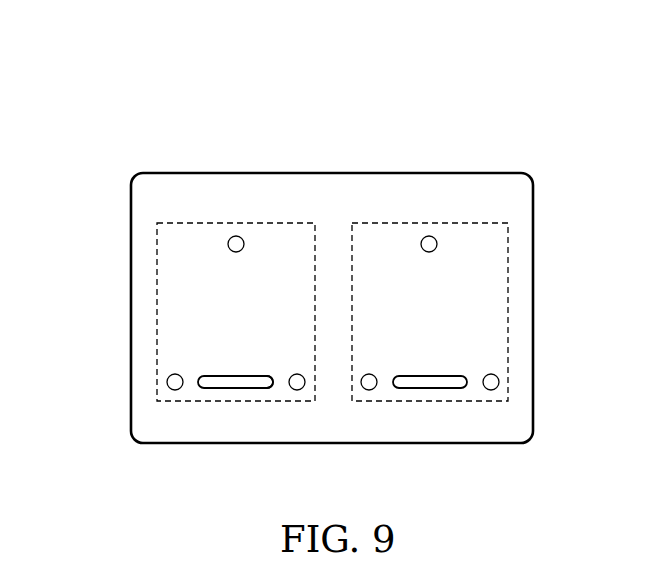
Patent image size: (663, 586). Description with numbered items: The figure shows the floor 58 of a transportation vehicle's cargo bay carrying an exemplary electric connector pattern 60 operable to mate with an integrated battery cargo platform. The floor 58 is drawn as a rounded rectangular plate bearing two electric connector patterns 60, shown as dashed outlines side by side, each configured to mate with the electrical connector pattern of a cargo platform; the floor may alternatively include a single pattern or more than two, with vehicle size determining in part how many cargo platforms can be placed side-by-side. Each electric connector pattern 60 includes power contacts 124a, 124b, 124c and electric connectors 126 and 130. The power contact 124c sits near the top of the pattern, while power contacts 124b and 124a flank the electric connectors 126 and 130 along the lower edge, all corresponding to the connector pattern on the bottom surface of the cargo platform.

The floor 58 is at (256, 173).
The electric connector pattern 60 is at (157, 292).
The power contact 124a is at (297, 390).
The power contact 124b is at (167, 383).
The power contact 124c is at (236, 252).
The electric connector 126 is at (218, 390).
The electric connector 130 is at (267, 390).